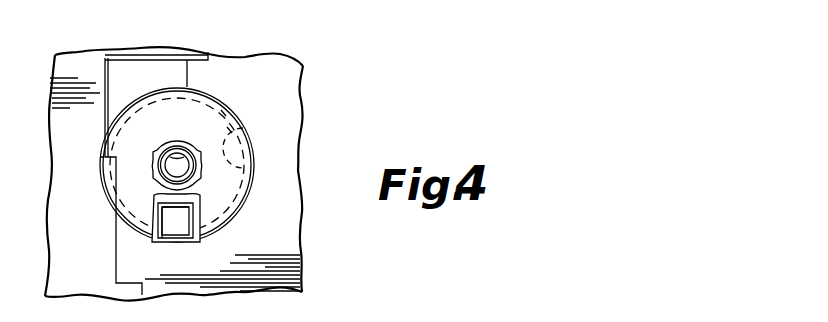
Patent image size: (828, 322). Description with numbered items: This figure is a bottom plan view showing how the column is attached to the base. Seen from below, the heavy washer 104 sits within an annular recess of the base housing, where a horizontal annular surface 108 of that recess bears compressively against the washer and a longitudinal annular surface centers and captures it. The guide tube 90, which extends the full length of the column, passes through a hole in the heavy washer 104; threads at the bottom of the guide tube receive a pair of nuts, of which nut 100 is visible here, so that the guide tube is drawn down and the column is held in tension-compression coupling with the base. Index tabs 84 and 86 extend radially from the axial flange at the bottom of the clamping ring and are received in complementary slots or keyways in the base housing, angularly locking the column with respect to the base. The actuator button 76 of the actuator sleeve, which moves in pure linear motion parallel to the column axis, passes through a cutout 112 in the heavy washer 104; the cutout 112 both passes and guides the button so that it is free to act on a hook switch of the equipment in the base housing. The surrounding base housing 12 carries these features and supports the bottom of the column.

The housing 12 is at (290, 135).
The actuator button 76 is at (175, 228).
The index tab 84 is at (177, 165).
The index tab 86 is at (228, 120).
The guide tube 90 is at (179, 157).
The nut 100 is at (201, 176).
The heavy washer 104 is at (223, 208).
The horizontal annular surface 108 is at (243, 98).
The cutout 112 is at (185, 215).